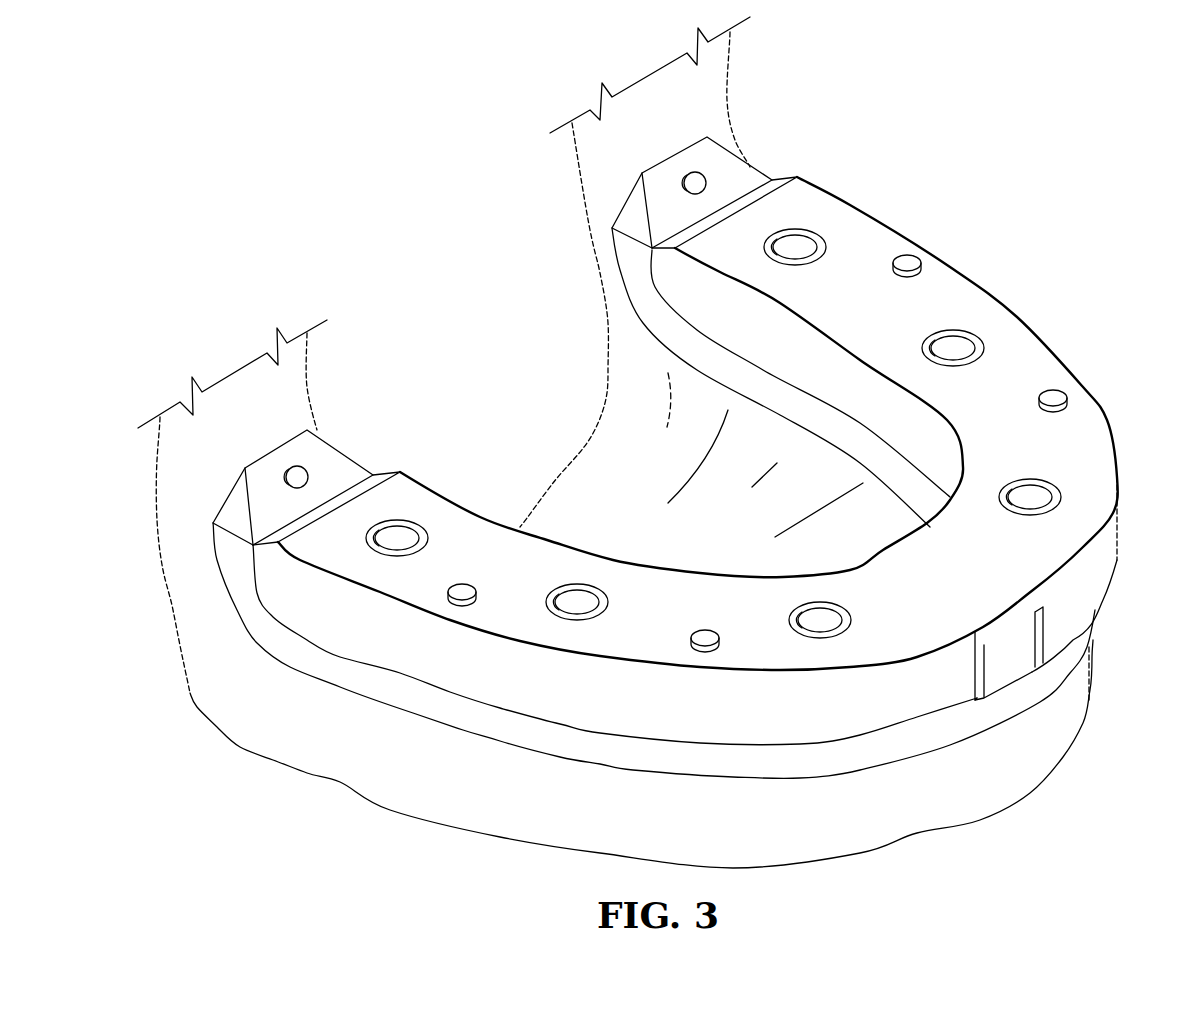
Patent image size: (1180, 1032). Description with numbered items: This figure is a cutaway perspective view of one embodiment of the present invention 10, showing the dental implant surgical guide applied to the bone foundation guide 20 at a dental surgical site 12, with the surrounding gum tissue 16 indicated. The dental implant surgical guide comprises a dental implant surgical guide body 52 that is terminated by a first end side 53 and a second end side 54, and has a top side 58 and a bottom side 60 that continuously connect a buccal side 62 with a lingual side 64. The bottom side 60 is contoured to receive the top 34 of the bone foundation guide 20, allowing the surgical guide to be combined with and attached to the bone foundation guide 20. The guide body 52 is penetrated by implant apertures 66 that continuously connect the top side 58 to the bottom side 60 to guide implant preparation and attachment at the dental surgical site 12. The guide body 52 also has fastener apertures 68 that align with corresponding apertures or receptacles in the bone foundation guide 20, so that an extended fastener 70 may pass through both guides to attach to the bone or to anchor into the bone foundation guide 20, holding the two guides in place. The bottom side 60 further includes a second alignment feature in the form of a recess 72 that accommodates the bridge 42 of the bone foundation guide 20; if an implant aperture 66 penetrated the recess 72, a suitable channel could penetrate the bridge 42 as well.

The present invention 10 is at (653, 462).
The dental surgical site 12 is at (845, 797).
The gum tissue 16 is at (480, 790).
The bone foundation guide 20 is at (298, 678).
The top of the bone foundation guide 34 is at (800, 722).
The bridge 42 is at (1013, 647).
The dental implant surgical guide body 52 is at (376, 680).
The first end side 53 is at (277, 520).
The second end side 54 is at (745, 193).
The top side 58 is at (767, 597).
The bottom side 60 is at (593, 750).
The buccal side 62 is at (730, 727).
The lingual side 64 is at (480, 512).
The implant apertures 66 is at (802, 240).
The fastener apertures 68 is at (917, 285).
The extended fastener 70 is at (908, 257).
The recess 72 is at (1010, 640).